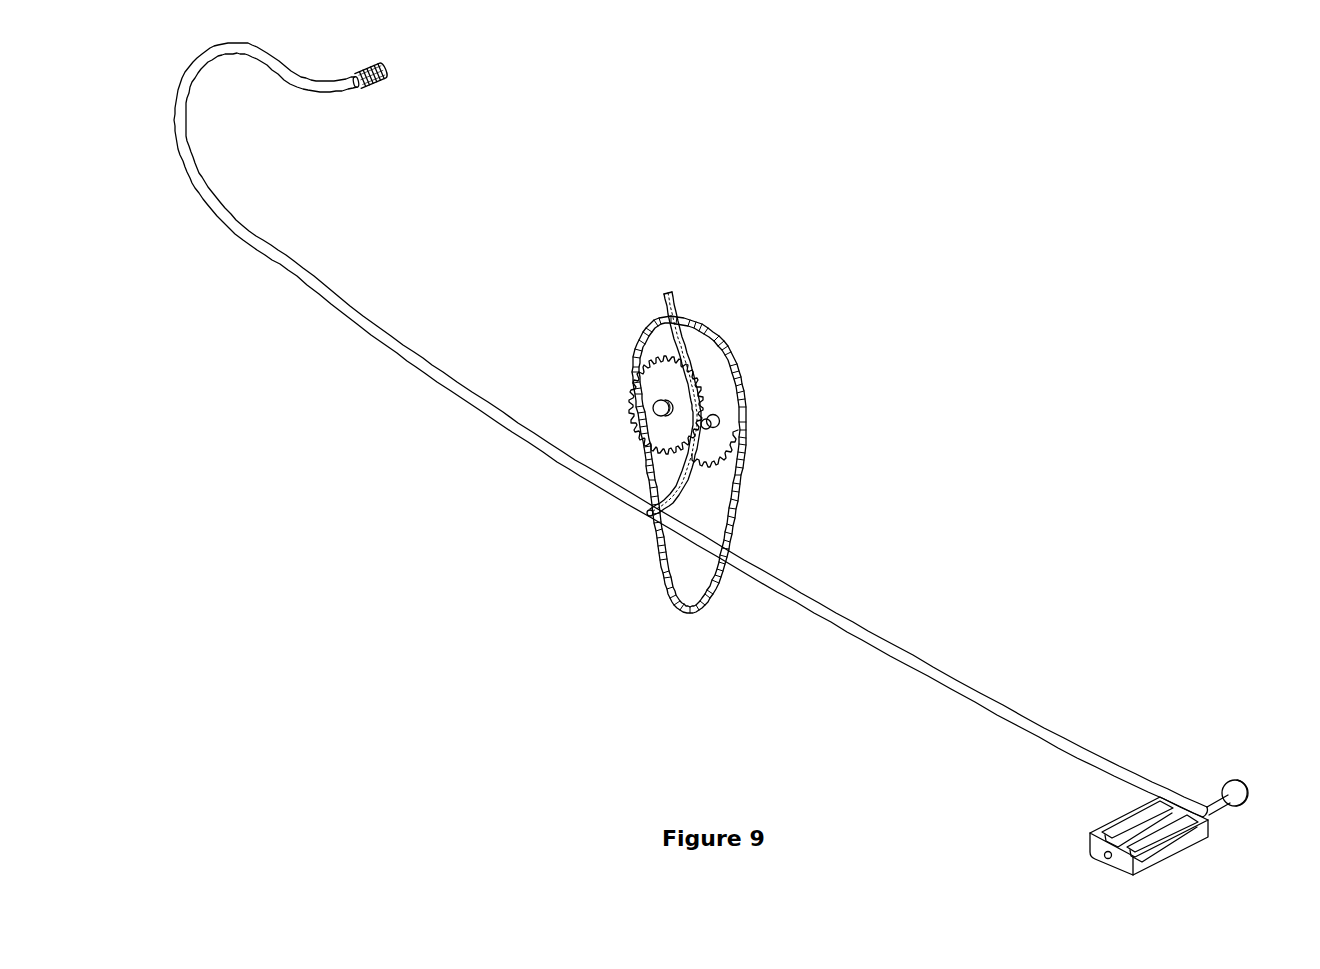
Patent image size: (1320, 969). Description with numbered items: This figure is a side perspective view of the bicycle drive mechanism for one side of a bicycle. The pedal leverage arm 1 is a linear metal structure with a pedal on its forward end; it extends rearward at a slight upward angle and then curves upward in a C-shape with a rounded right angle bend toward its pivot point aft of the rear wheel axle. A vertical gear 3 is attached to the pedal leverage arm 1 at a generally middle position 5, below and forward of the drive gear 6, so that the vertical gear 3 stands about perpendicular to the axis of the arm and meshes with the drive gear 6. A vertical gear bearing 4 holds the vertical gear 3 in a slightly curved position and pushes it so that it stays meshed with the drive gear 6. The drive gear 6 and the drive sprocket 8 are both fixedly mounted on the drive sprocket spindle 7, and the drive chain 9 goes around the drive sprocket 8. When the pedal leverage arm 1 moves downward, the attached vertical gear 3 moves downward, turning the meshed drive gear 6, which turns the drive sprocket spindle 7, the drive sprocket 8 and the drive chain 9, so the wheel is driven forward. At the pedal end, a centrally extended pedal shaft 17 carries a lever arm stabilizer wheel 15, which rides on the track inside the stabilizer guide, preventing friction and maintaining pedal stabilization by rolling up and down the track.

The pedal leverage arm 1 is at (430, 380).
The vertical gear 3 is at (680, 315).
The vertical gear bearing 4 is at (713, 428).
The middle position 5 is at (647, 514).
The drive gear 6 is at (666, 405).
The drive sprocket spindle 7 is at (655, 408).
The drive sprocket 8 is at (721, 390).
The drive chain 9 is at (741, 518).
The lever arm stabilizer wheel 15 is at (1231, 781).
The pedal shaft 17 is at (1220, 806).